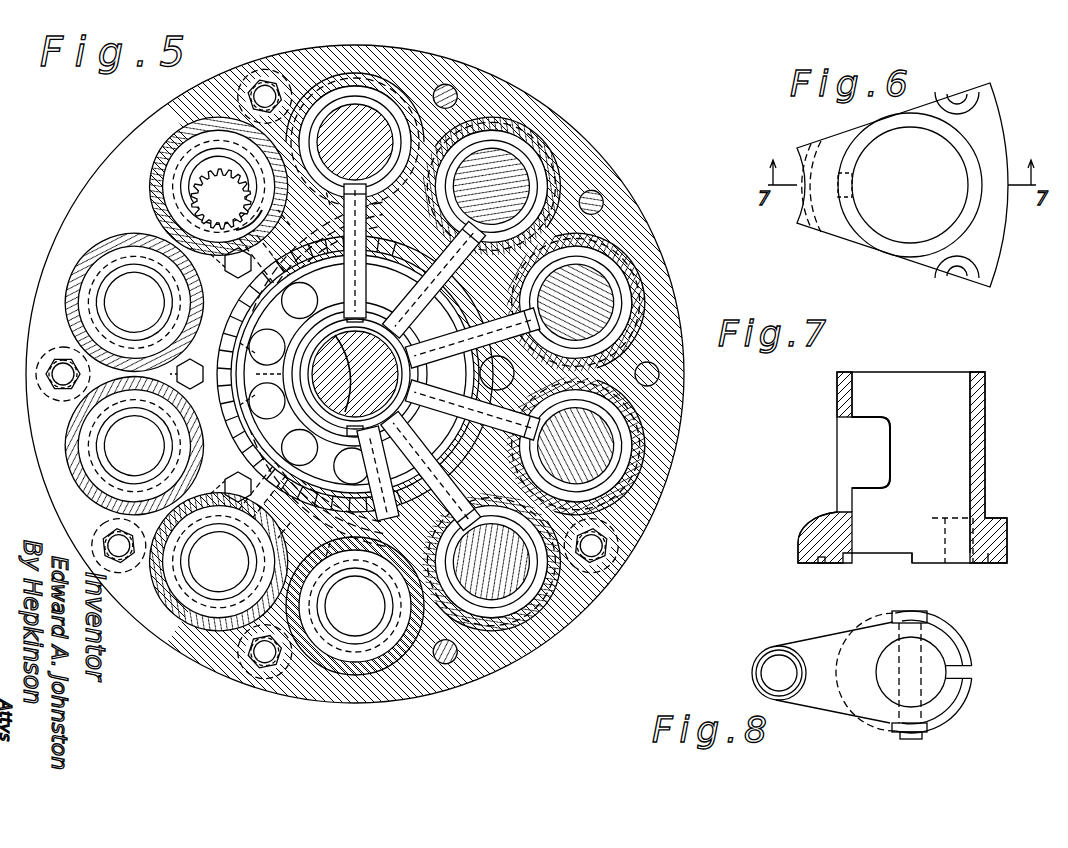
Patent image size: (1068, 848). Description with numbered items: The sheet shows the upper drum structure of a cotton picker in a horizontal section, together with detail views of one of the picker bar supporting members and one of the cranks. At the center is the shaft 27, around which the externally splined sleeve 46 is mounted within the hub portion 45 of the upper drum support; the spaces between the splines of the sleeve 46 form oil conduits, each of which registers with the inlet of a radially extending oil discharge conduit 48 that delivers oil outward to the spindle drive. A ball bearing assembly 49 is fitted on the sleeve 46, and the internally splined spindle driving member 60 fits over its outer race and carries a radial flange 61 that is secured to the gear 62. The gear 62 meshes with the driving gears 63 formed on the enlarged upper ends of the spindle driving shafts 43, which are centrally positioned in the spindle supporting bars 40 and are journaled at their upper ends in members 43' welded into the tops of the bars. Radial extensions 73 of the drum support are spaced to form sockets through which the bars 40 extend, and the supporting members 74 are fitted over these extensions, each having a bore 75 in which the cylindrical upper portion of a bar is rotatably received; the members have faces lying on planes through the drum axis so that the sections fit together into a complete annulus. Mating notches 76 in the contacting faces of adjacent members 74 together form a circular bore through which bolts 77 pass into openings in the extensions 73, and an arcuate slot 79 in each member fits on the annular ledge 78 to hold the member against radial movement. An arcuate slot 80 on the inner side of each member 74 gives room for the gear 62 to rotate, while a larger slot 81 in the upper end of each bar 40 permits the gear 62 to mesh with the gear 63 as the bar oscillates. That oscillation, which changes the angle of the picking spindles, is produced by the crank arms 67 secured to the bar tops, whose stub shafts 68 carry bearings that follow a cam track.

In FIG. 5, the shaft 27 is at (431, 470).
In FIG. 5, the spindle supporting bars 40 is at (590, 163).
In FIG. 5, the spindle driving shafts 43 is at (548, 443).
In FIG. 8, the members 43' is at (922, 675).
In FIG. 5, the hub portion 45 is at (472, 340).
In FIG. 5, the externally splined sleeve 46 is at (434, 279).
In FIG. 5, the oil discharge conduit 48 is at (378, 473).
In FIG. 5, the ball bearing assembly 49 is at (369, 251).
In FIG. 5, the spindle driving member 60 is at (269, 381).
In FIG. 5, the radial flange 61 is at (160, 296).
In FIG. 5, the gear 62 is at (217, 199).
In FIG. 5, the driving gears 63 is at (219, 391).
In FIG. 8, the crank arms 67 is at (836, 696).
In FIG. 8, the stub shafts 68 is at (779, 670).
In FIG. 5, the radial extensions 73 is at (482, 106).
In FIG. 5, the supporting members 74 is at (446, 92).
In FIG. 6, the supporting members 74 is at (1000, 136).
In FIG. 7, the supporting members 74 is at (986, 437).
In FIG. 5, the bores 75 is at (556, 157).
In FIG. 6, the bores 75 is at (964, 209).
In FIG. 7, the bores 75 is at (972, 395).
In FIG. 5, the mating notches 76 is at (602, 200).
In FIG. 6, the mating notches 76 is at (959, 98).
In FIG. 5, the bolts 77 is at (265, 90).
In FIG. 5, the annular ledge 78 is at (472, 398).
In FIG. 6, the arcuate slot 79 is at (803, 232).
In FIG. 7, the arcuate slot 79 is at (821, 563).
In FIG. 5, the arcuate slot 80 is at (277, 374).
In FIG. 7, the arcuate slot 80 is at (870, 445).
In FIG. 5, the slot 81 is at (250, 130).